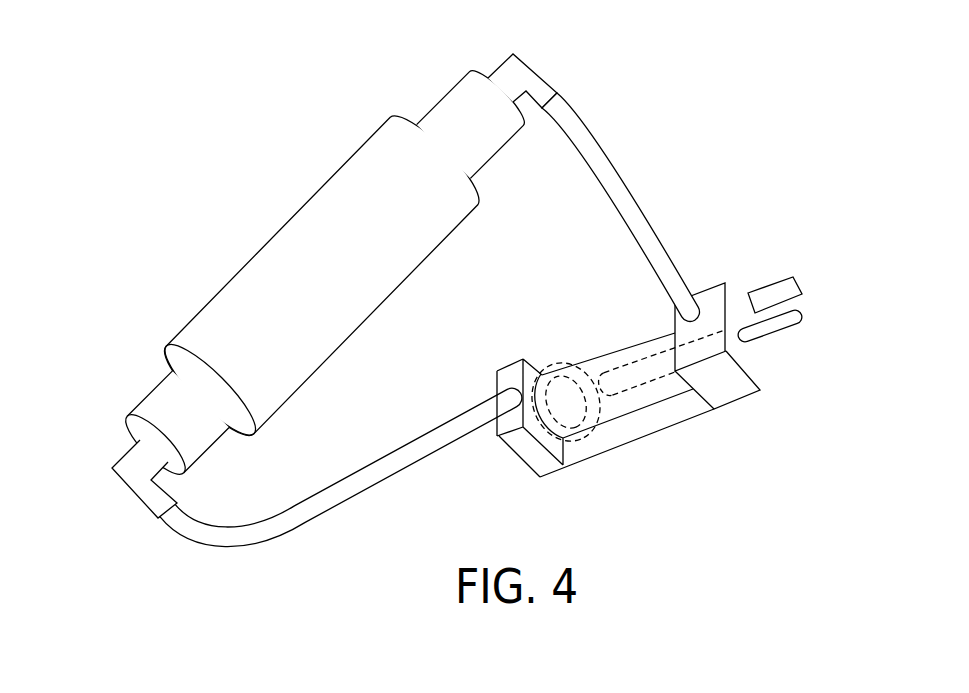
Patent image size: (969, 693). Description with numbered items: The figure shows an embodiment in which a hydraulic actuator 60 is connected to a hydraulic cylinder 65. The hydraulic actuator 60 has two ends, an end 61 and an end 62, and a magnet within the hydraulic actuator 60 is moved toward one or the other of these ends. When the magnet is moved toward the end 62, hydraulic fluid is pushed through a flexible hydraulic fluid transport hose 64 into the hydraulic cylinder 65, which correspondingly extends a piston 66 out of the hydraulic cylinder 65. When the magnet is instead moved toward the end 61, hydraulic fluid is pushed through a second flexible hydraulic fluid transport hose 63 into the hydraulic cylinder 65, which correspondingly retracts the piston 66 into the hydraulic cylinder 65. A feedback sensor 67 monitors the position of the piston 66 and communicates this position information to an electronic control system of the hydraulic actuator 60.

The hydraulic actuator 60 is at (387, 302).
The end 61 is at (548, 80).
The end 62 is at (113, 472).
The flexible hydraulic fluid transport hose 63 is at (595, 137).
The flexible hydraulic fluid transport hose 64 is at (434, 452).
The hydraulic cylinder 65 is at (745, 400).
The piston 66 is at (803, 319).
The feedback sensor 67 is at (790, 276).